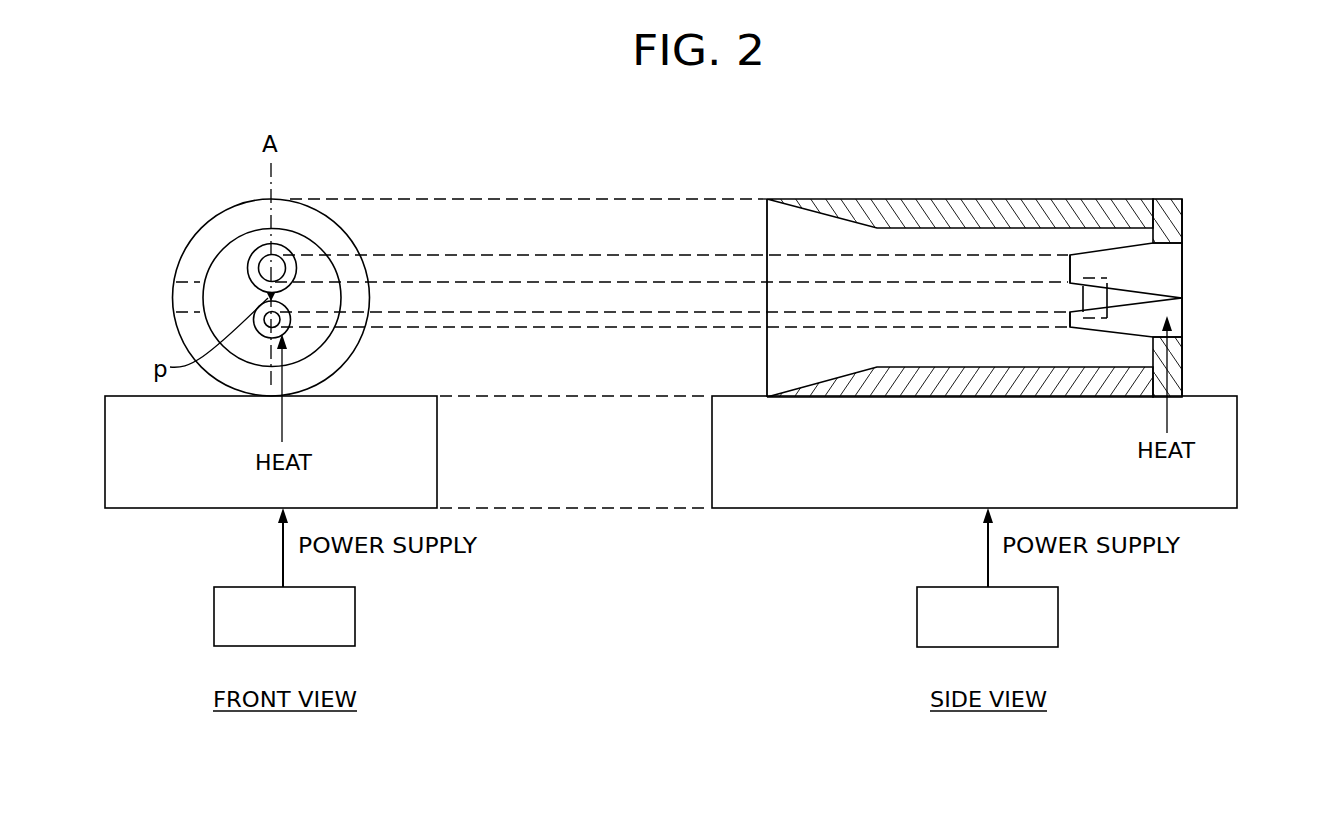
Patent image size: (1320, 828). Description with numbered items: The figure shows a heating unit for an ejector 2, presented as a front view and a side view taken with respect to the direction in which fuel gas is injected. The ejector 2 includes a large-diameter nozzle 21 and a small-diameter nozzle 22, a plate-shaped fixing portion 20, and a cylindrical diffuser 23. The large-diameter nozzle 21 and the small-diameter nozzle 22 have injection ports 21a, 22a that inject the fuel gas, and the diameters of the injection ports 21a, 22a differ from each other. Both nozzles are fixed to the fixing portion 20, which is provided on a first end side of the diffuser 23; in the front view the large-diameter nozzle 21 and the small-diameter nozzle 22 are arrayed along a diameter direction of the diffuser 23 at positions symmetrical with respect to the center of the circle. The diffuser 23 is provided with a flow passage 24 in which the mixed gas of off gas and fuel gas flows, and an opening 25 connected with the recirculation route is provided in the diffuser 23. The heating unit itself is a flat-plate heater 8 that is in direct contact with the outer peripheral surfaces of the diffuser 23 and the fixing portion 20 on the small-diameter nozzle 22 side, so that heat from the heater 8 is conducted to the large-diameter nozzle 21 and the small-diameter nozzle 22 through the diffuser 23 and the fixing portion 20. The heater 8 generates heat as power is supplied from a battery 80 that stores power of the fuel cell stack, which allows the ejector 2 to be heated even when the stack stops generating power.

The ejector 2 is at (356, 226).
The heater 8 is at (407, 397).
The fixing portion 20 is at (1167, 200).
The large-diameter nozzle 21 is at (283, 248).
The injection port of the large-diameter nozzle 21a is at (1070, 255).
The small-diameter nozzle 22 is at (275, 297).
The injection port of the small-diameter nozzle 22a is at (1072, 328).
The diffuser 23 is at (275, 200).
The flow passage 24 is at (238, 310).
The opening 25 is at (190, 279).
The battery 80 is at (355, 596).